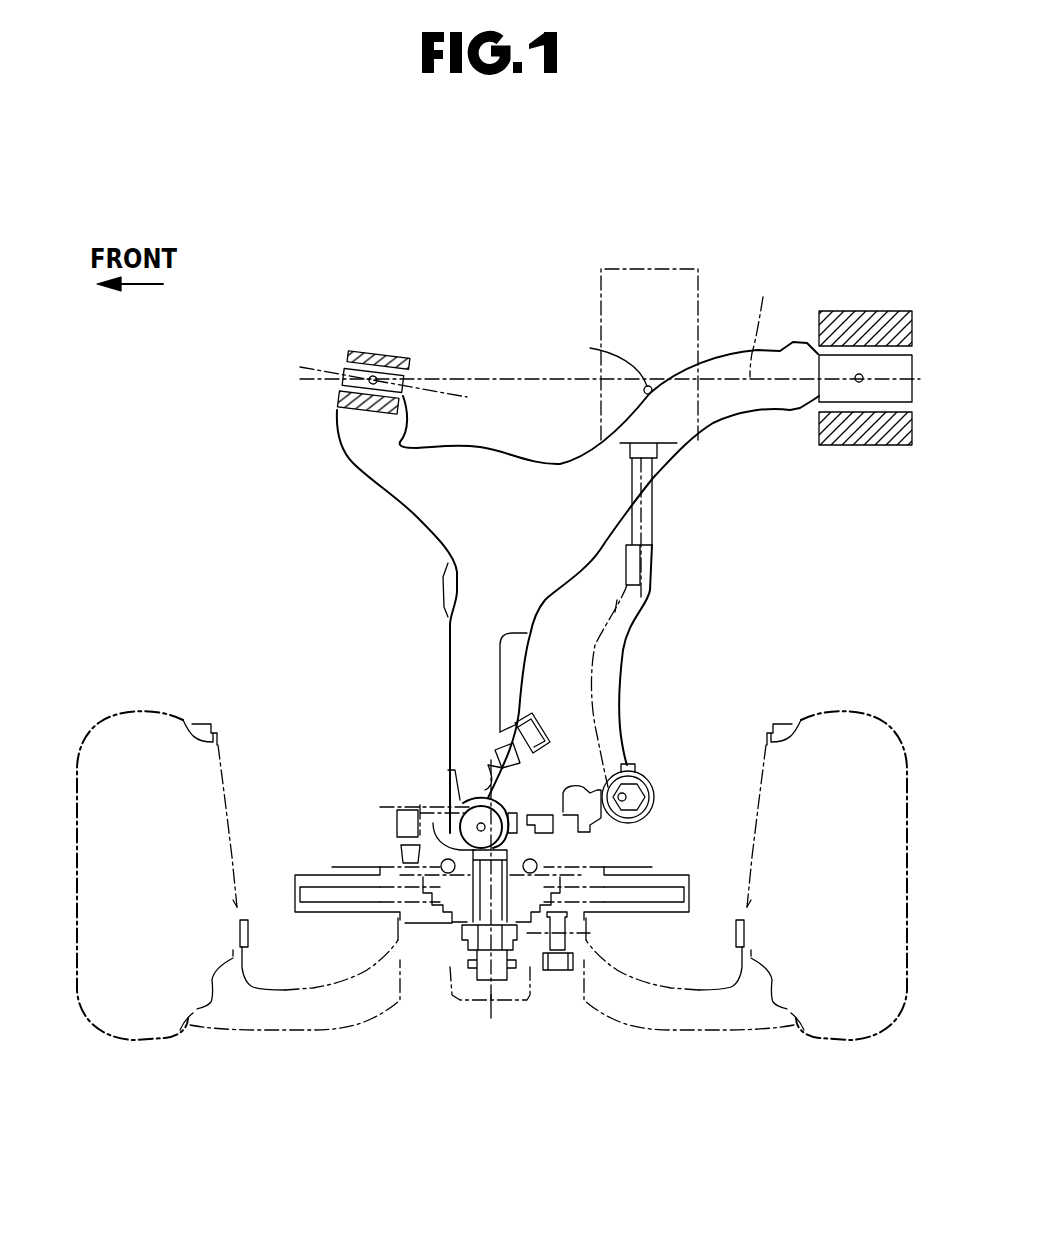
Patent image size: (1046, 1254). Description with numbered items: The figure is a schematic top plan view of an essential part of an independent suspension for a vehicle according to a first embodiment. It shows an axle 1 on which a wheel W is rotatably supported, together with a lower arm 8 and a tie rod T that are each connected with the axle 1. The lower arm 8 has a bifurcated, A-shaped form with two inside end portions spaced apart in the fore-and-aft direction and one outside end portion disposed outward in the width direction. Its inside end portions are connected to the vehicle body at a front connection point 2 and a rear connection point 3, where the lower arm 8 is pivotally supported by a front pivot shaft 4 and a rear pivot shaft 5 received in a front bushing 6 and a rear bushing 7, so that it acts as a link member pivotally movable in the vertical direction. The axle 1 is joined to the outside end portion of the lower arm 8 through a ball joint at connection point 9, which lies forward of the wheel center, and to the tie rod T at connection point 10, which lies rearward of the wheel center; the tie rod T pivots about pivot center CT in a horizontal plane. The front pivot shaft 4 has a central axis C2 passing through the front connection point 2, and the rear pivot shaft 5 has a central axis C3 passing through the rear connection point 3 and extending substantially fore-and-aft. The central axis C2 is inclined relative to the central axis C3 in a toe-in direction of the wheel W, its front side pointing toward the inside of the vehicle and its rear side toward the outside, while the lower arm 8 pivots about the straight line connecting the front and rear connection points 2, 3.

The axle 1 is at (557, 848).
The front connection point 2 is at (373, 377).
The rear connection point 3 is at (862, 373).
The front pivot shaft 4 is at (403, 393).
The rear pivot shaft 5 is at (820, 390).
The front bushing 6 is at (398, 352).
The rear bushing 7 is at (843, 316).
The lower arm 8 is at (417, 518).
The connection point 9 is at (481, 827).
The connection point 10 is at (622, 797).
The central axis C2 is at (577, 366).
The central axis C3 is at (760, 321).
The pivot center CT is at (590, 348).
The tie rod T is at (633, 633).
The wheel W is at (146, 712).